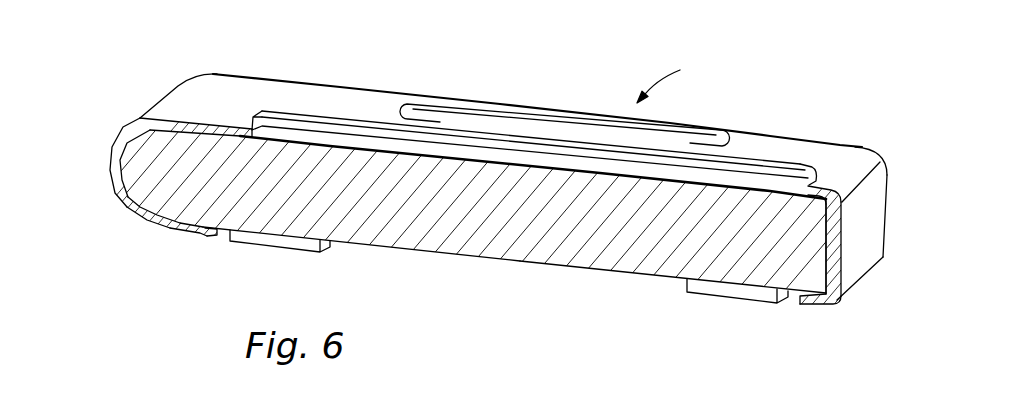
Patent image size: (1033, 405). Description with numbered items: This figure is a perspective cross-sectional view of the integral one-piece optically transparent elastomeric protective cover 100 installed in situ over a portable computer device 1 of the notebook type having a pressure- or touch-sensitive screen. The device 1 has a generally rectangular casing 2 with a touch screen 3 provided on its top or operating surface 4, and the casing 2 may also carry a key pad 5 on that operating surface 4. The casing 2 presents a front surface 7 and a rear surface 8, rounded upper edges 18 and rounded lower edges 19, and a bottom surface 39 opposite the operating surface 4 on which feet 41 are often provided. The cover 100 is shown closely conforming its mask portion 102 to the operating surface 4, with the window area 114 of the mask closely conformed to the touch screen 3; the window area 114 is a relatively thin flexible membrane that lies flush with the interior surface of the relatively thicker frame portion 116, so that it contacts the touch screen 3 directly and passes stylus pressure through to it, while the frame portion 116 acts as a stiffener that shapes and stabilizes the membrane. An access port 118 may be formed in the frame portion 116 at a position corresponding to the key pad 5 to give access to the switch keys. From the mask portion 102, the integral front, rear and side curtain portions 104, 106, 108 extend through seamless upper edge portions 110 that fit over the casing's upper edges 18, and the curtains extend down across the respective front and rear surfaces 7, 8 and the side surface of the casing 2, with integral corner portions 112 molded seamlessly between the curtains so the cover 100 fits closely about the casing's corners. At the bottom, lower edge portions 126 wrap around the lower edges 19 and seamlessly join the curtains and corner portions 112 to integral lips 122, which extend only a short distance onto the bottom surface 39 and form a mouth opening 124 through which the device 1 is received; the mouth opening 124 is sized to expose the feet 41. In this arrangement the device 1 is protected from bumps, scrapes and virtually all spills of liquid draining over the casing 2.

The portable computer device 1 is at (487, 230).
The casing 2 is at (627, 270).
The touch screen 3 is at (723, 187).
The operating surface 4 is at (230, 127).
The key pad 5 is at (537, 123).
The front surface 7 is at (833, 238).
The rear surface 8 is at (112, 160).
The upper edges 18 is at (133, 125).
The lower edges 19 is at (133, 215).
The bottom surface 39 is at (413, 248).
The feet 41 is at (277, 250).
The protective cover 100 is at (483, 99).
The mask portion 102 is at (240, 95).
The front curtain portion 104 is at (862, 217).
The rear curtain portion 106 is at (110, 177).
The side curtain portion 108 is at (400, 93).
The upper edge portions 110 is at (167, 103).
The corner portions 112 is at (883, 238).
The window area 114 is at (325, 133).
The frame portion 116 is at (362, 98).
The access port 118 is at (730, 133).
The lips 122 is at (170, 233).
The mouth opening 124 is at (217, 230).
The lower edge portions 126 is at (133, 220).